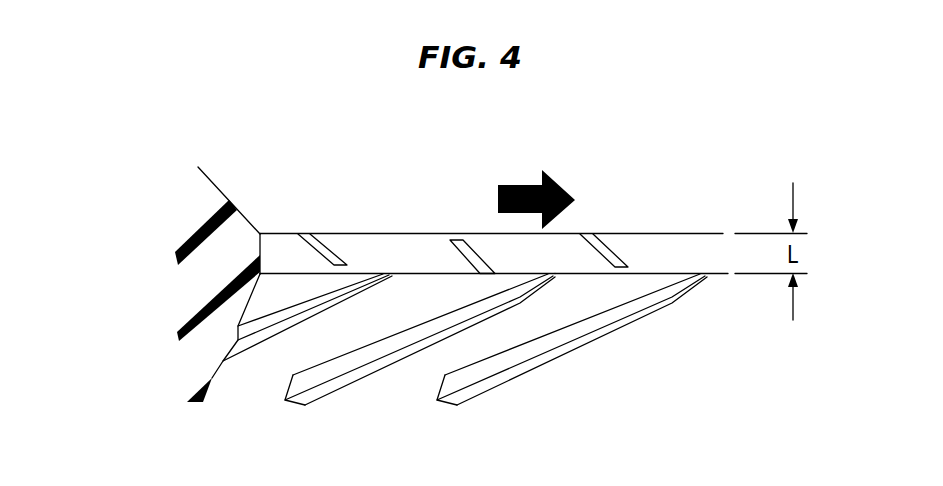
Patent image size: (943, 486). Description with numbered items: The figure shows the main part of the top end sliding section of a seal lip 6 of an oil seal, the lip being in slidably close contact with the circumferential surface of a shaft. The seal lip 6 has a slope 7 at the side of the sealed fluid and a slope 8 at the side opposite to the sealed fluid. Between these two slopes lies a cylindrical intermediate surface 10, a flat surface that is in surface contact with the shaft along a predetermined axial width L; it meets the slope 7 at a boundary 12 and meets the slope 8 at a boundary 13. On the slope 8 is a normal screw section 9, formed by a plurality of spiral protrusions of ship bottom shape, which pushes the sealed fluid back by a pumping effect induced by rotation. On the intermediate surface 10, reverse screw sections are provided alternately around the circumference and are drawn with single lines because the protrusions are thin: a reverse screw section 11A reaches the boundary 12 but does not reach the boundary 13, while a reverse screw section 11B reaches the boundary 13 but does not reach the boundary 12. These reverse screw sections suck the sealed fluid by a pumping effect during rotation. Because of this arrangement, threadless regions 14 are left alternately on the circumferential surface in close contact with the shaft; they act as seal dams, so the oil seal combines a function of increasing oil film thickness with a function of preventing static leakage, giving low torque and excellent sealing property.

The seal lip 6 is at (190, 236).
The slope at the side of sealed fluid 7 is at (225, 195).
The slope at the side opposite to the sealed fluid 8 is at (212, 380).
The normal screw section 9 is at (465, 395).
The intermediate surface 10 is at (262, 255).
The reverse screw section 11A is at (330, 243).
The reverse screw section 11B is at (468, 240).
The boundary 12 is at (645, 232).
The boundary 13 is at (647, 274).
The threadless region 14 is at (453, 236).